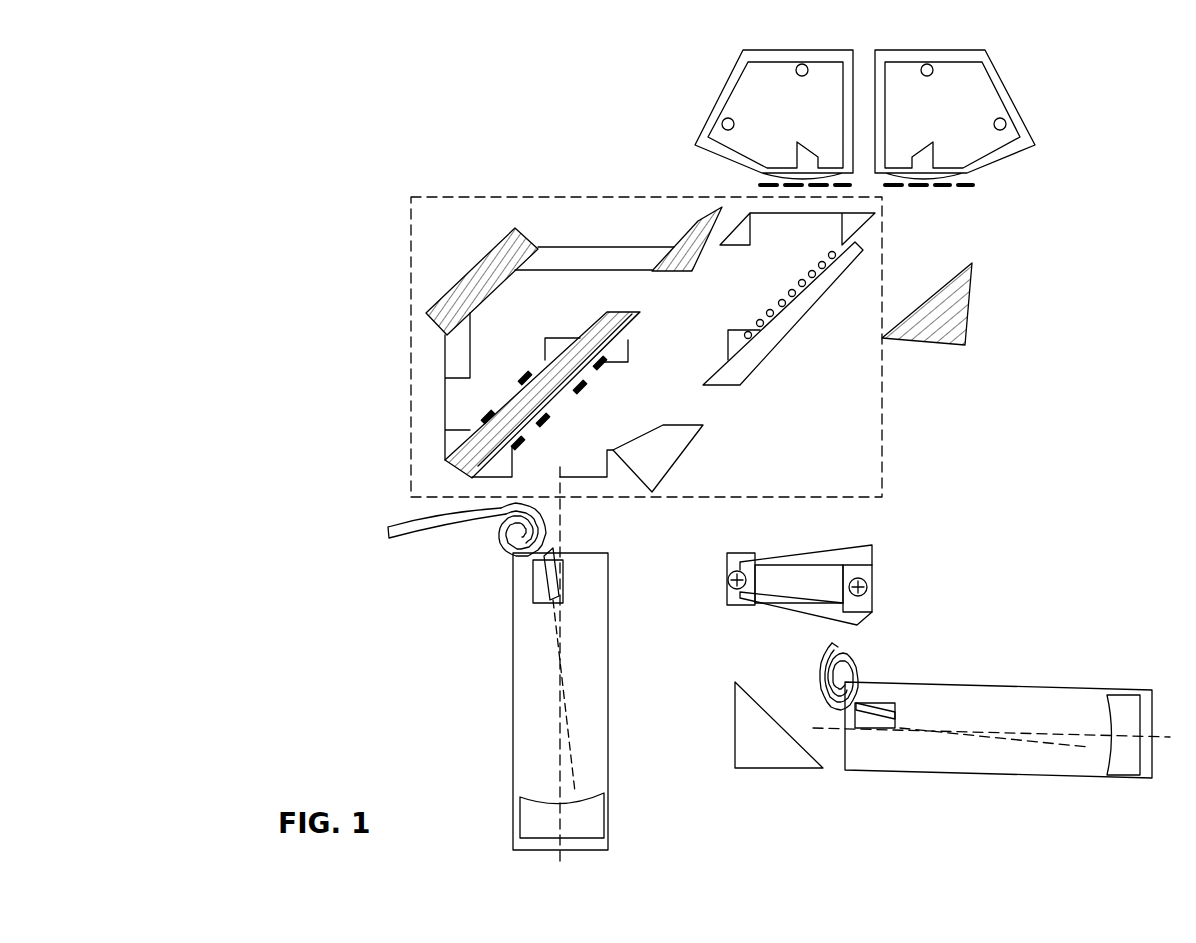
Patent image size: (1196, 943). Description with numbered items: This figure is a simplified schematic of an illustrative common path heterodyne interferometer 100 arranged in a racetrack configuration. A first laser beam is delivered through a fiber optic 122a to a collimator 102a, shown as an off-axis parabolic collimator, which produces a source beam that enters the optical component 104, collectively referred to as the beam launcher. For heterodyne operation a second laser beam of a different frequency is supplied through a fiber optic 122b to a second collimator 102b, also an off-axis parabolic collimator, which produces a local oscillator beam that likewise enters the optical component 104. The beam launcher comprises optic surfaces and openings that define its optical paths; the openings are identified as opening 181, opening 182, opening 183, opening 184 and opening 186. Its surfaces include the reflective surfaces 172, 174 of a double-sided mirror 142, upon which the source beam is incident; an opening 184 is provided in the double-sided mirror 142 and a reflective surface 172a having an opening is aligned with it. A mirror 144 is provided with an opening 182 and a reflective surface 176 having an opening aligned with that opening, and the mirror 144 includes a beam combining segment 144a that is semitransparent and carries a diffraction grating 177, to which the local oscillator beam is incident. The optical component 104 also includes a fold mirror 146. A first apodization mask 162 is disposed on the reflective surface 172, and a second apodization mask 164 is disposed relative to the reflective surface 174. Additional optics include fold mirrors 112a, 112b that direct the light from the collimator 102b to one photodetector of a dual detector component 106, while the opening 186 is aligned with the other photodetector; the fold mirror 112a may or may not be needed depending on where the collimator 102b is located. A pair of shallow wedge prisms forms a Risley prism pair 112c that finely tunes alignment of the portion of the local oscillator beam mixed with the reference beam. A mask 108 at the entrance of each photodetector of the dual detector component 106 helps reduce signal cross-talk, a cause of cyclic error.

The optical system 100 is at (342, 175).
The collimator 102a is at (612, 845).
The second collimator 102b is at (893, 772).
The optical component (beam launcher) 104 is at (462, 196).
The dual detector component 106 is at (674, 93).
The mask 108 is at (985, 185).
The fold mirror 112a is at (780, 772).
The fold mirror 112b is at (968, 305).
The Risley prism pair 112c is at (875, 568).
The fiber optic 122a is at (397, 552).
The fiber optic 122b is at (862, 660).
The double-sided mirror 142 is at (690, 226).
The mirror 144 is at (680, 462).
The beam combining segment 144a is at (857, 262).
The fold mirror 146 is at (477, 267).
The first apodization mask 162 is at (573, 394).
The second apodization mask 164 is at (522, 378).
The reflective surface 172 is at (570, 409).
The reflective surface 172a is at (648, 319).
The reflective surface 174 is at (500, 400).
The reflective surface 176 is at (710, 359).
The diffraction grating 177 is at (778, 300).
The opening 181 is at (592, 470).
The opening 182 is at (715, 400).
The opening 183 is at (445, 427).
The opening 184 is at (640, 287).
The opening 186 is at (798, 224).